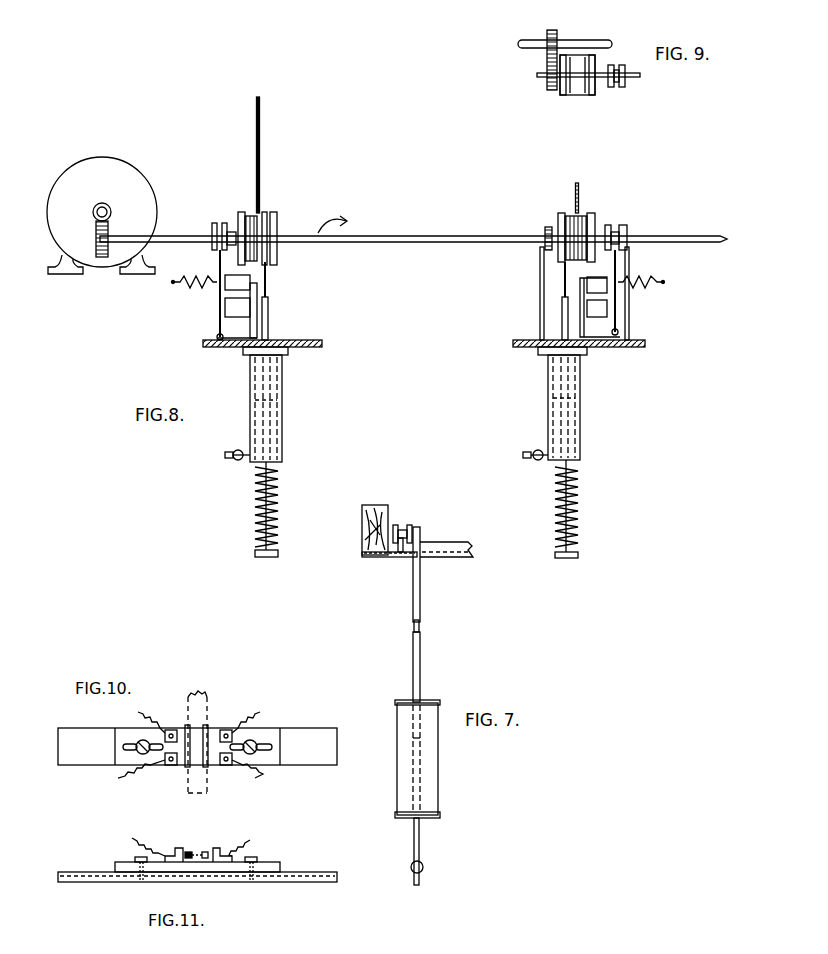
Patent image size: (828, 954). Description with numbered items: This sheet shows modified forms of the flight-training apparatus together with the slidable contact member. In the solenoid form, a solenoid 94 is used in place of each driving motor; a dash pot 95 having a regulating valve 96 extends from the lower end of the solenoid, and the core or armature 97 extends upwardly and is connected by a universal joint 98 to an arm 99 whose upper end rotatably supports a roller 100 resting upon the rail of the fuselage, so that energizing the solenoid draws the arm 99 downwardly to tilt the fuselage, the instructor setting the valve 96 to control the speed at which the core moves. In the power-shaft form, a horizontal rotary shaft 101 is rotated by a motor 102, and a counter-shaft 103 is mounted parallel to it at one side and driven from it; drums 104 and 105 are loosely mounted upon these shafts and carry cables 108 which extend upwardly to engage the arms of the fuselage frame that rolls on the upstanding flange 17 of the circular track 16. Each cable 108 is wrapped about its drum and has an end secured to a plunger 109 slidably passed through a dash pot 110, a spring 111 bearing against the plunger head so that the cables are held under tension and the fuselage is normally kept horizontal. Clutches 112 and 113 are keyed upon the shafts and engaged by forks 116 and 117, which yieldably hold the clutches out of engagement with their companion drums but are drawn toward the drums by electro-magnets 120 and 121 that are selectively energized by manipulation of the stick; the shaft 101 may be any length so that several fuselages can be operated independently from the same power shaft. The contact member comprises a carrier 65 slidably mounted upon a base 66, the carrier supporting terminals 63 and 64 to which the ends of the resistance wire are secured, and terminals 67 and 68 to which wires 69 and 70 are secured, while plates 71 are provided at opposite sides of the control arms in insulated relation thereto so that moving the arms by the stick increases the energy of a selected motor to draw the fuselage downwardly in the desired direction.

In FIG. 7, the circular track 16 is at (362, 556).
In FIG. 7, the upstanding flange 17 is at (440, 542).
In FIG. 10, the terminal 63 is at (226, 765).
In FIG. 10, the terminal 64 is at (166, 765).
In FIG. 11, the terminal 64 is at (178, 848).
In FIG. 10, the carrier 65 is at (265, 758).
In FIG. 11, the carrier 65 is at (220, 868).
In FIG. 10, the base 66 is at (310, 738).
In FIG. 11, the base 66 is at (310, 872).
In FIG. 10, the terminal 67 is at (230, 730).
In FIG. 10, the terminal 68 is at (165, 735).
In FIG. 10, the wire 69 is at (260, 712).
In FIG. 11, the wire 69 is at (251, 840).
In FIG. 10, the wire 70 is at (138, 712).
In FIG. 11, the wire 70 is at (133, 838).
In FIG. 10, the plates 71 is at (186, 724).
In FIG. 11, the plates 71 is at (208, 852).
In FIG. 7, the solenoid 94 is at (440, 770).
In FIG. 7, the dash pot 95 is at (420, 842).
In FIG. 7, the regulating valve 96 is at (424, 866).
In FIG. 7, the core or armature 97 is at (422, 660).
In FIG. 7, the universal joint 98 is at (422, 627).
In FIG. 7, the arm 99 is at (413, 595).
In FIG. 7, the roller 100 is at (405, 523).
In FIG. 9, the rotary shaft 101 is at (585, 42).
In FIG. 8, the rotary shaft 101 is at (410, 232).
In FIG. 8, the motor 102 is at (130, 178).
In FIG. 9, the counter-shaft 103 is at (537, 80).
In FIG. 8, the counter-shaft 103 is at (550, 223).
In FIG. 9, the drum 104 is at (576, 92).
In FIG. 8, the drum 104 is at (596, 214).
In FIG. 8, the drum 105 is at (275, 215).
In FIG. 8, the cable 108 is at (259, 147).
In FIG. 8, the plunger 109 is at (268, 316).
In FIG. 8, the dash pot 110 is at (283, 398).
In FIG. 8, the spring 111 is at (278, 499).
In FIG. 9, the clutch 112 is at (625, 84).
In FIG. 8, the clutch 112 is at (628, 226).
In FIG. 8, the clutch 113 is at (213, 223).
In FIG. 8, the fork 116 is at (615, 268).
In FIG. 8, the fork 117 is at (217, 265).
In FIG. 8, the electro-magnet 120 is at (600, 310).
In FIG. 8, the electro-magnet 121 is at (228, 305).